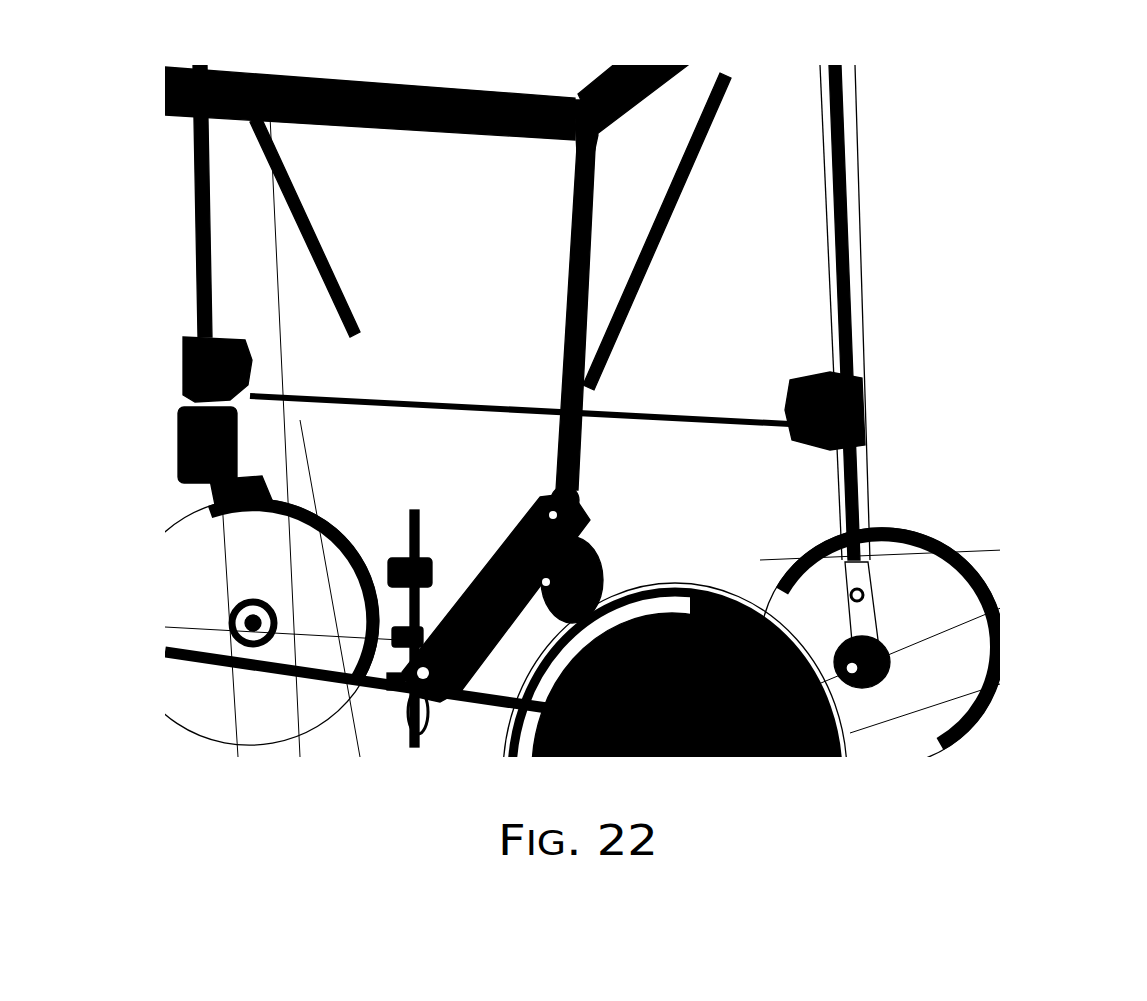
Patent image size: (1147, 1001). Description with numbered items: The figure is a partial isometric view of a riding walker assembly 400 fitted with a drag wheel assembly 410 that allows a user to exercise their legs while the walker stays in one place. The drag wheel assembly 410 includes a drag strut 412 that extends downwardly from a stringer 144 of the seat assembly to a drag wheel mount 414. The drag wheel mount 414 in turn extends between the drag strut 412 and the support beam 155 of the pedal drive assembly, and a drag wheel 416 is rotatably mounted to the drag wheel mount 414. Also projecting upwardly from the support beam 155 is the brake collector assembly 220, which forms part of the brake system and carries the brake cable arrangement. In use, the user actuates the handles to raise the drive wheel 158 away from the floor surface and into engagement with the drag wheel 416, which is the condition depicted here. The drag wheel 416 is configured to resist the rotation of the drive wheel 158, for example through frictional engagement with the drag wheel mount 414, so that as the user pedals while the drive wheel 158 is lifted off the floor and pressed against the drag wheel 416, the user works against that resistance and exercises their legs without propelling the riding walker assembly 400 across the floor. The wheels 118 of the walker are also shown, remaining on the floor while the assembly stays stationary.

The stringer 144 is at (652, 72).
The riding walker assembly 400 is at (1028, 125).
The drag strut 412 is at (565, 342).
The drag wheel assembly 410 is at (481, 457).
The wheel 118 is at (193, 513).
The brake collector assembly 220 is at (380, 513).
The drag wheel mount 414 is at (508, 537).
The drag wheel 416 is at (595, 557).
The support beam 155 is at (360, 714).
The drive wheel 158 is at (850, 740).